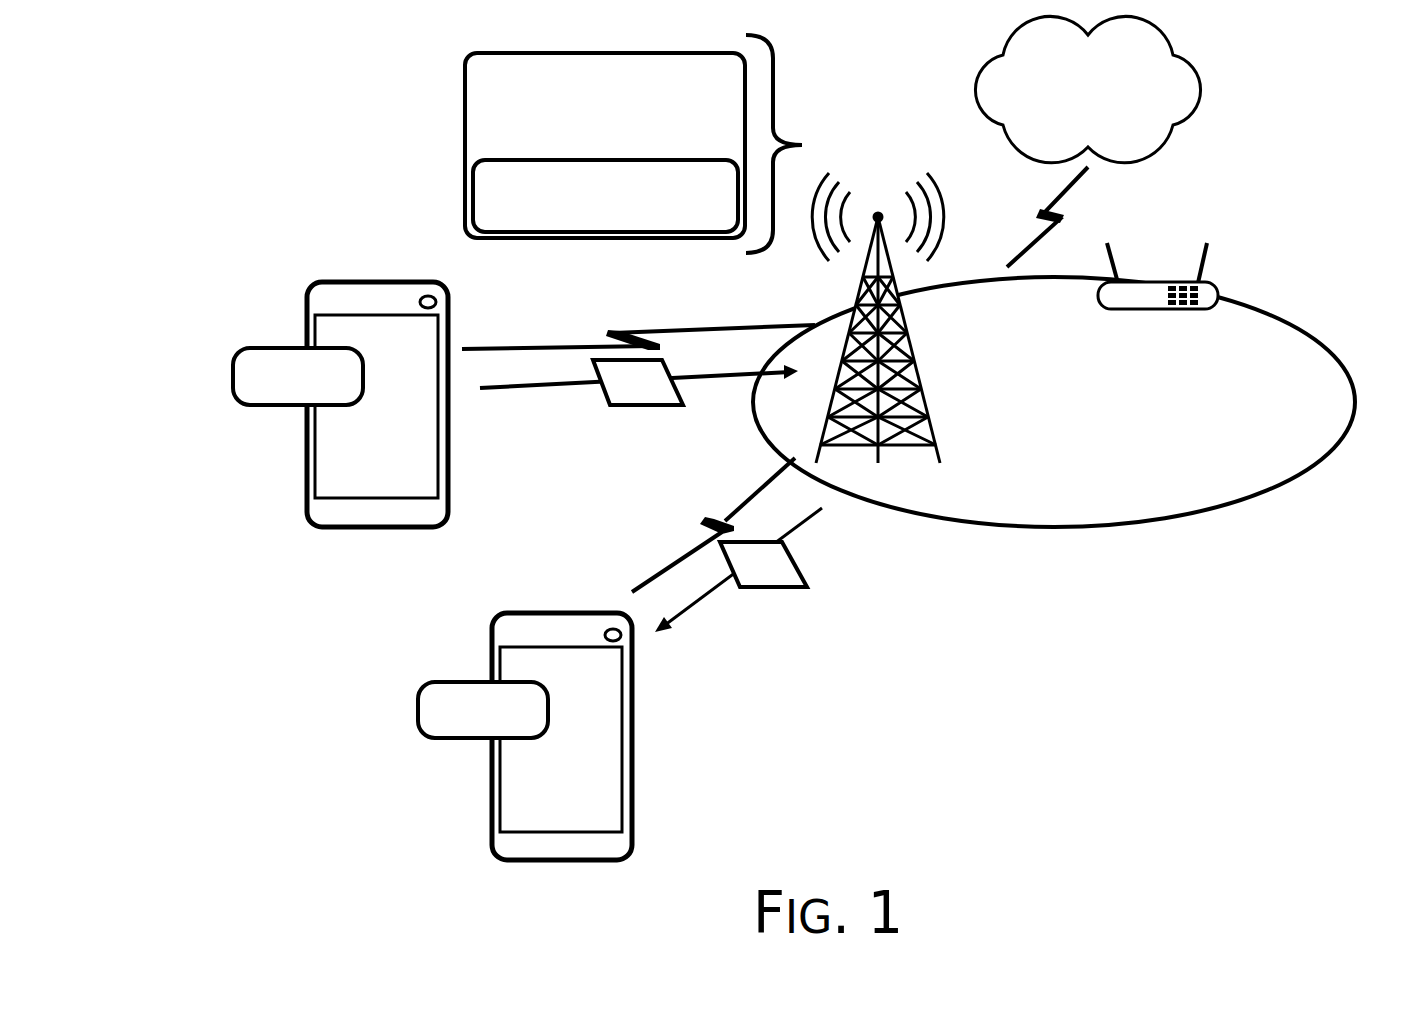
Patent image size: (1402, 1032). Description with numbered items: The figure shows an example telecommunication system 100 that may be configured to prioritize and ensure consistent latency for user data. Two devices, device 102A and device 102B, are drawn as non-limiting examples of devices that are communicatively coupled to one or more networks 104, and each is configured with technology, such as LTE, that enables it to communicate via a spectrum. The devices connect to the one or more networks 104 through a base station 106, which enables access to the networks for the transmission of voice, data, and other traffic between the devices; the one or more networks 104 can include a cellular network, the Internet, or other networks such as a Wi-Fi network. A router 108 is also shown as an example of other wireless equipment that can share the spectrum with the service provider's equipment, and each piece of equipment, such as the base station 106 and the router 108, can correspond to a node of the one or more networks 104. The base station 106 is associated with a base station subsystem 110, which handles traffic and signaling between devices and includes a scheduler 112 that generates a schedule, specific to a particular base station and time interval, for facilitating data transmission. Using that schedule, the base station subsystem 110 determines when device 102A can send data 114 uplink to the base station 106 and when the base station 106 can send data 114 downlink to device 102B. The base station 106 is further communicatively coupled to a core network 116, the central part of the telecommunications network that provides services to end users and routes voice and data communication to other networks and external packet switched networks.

The telecommunication system 100 is at (180, 60).
The device 102A is at (318, 281).
The device 102B is at (512, 612).
The one or more networks 104 is at (1125, 414).
The base station 106 is at (906, 345).
The router 108 is at (1217, 287).
The base station subsystem 110 is at (688, 116).
The scheduler 112 is at (687, 207).
The data 114 is at (655, 393).
The core network 116 is at (1192, 102).